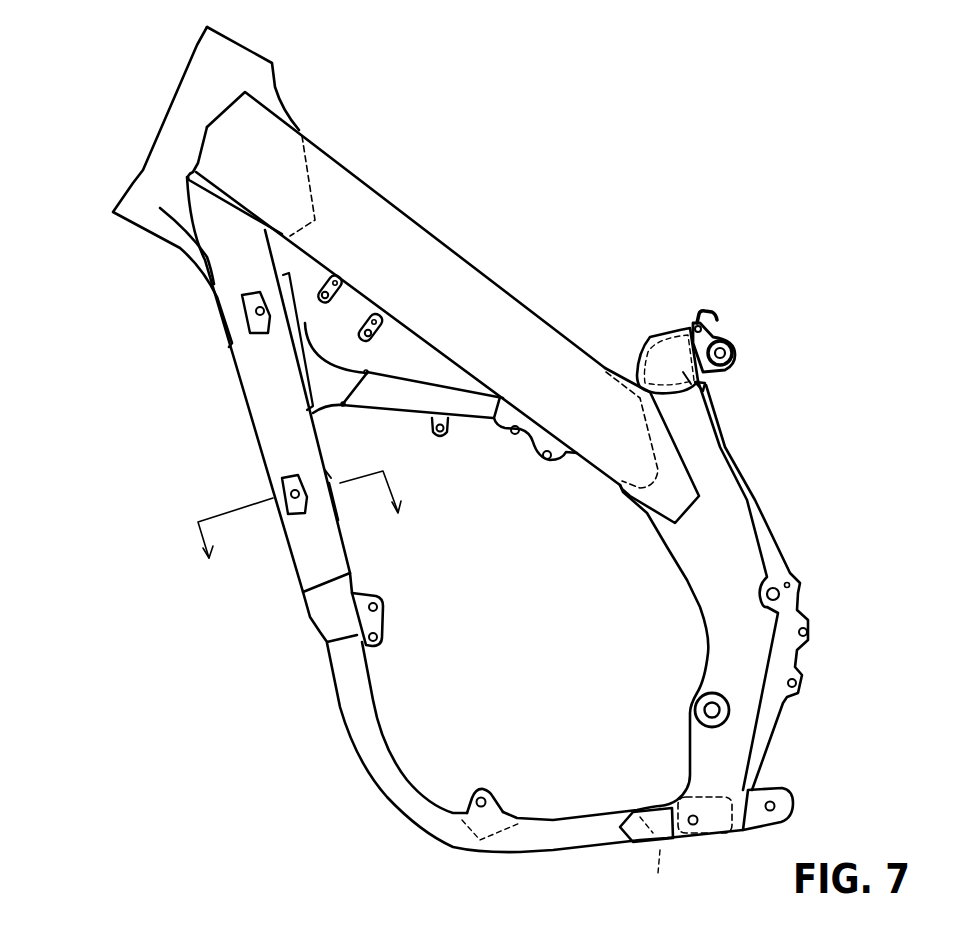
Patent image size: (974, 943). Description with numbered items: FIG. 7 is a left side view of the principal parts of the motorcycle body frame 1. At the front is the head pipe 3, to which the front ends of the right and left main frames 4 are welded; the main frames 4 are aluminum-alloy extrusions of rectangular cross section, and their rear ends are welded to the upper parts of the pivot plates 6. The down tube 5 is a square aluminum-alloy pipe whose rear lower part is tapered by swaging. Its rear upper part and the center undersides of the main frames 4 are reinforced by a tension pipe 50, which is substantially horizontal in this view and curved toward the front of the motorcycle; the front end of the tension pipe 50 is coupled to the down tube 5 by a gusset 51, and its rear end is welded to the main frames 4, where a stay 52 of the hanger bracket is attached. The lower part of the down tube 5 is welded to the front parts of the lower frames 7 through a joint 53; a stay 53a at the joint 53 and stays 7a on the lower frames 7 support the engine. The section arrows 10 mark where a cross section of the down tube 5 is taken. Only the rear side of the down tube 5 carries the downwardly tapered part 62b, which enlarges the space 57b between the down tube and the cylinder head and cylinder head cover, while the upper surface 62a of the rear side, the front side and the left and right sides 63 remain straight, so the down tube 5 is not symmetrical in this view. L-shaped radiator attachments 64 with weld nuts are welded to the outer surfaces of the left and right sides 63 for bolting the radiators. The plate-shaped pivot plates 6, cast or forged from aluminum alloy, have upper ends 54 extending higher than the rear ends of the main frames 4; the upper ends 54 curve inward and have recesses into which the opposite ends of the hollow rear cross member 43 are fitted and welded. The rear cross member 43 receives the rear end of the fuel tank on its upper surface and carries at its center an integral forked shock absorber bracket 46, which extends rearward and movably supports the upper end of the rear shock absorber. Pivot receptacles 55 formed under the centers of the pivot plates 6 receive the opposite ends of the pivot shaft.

The motorcycle body frame 1 is at (473, 226).
The head pipe 3 is at (157, 137).
The main frames 4 is at (367, 190).
The down tube 5 is at (253, 427).
The pivot plates 6 is at (735, 537).
The lower frames 7 is at (590, 817).
The stays 7a is at (500, 800).
The section line 10 is at (310, 540).
The rear cross member 43 is at (653, 347).
The shock absorber bracket 46 is at (723, 340).
The tension pipe 50 is at (410, 405).
The gusset 51 is at (313, 357).
The stay 52 is at (523, 443).
The joint 53 is at (307, 610).
The stay 53a is at (380, 598).
The upper ends 54 is at (708, 388).
The pivot receptacles 55 is at (697, 700).
The space 57b is at (380, 527).
The upper surface 62a is at (302, 327).
The tapered part 62b is at (330, 475).
The left and right sides 63 is at (263, 370).
The radiator attachments 64 is at (243, 312).